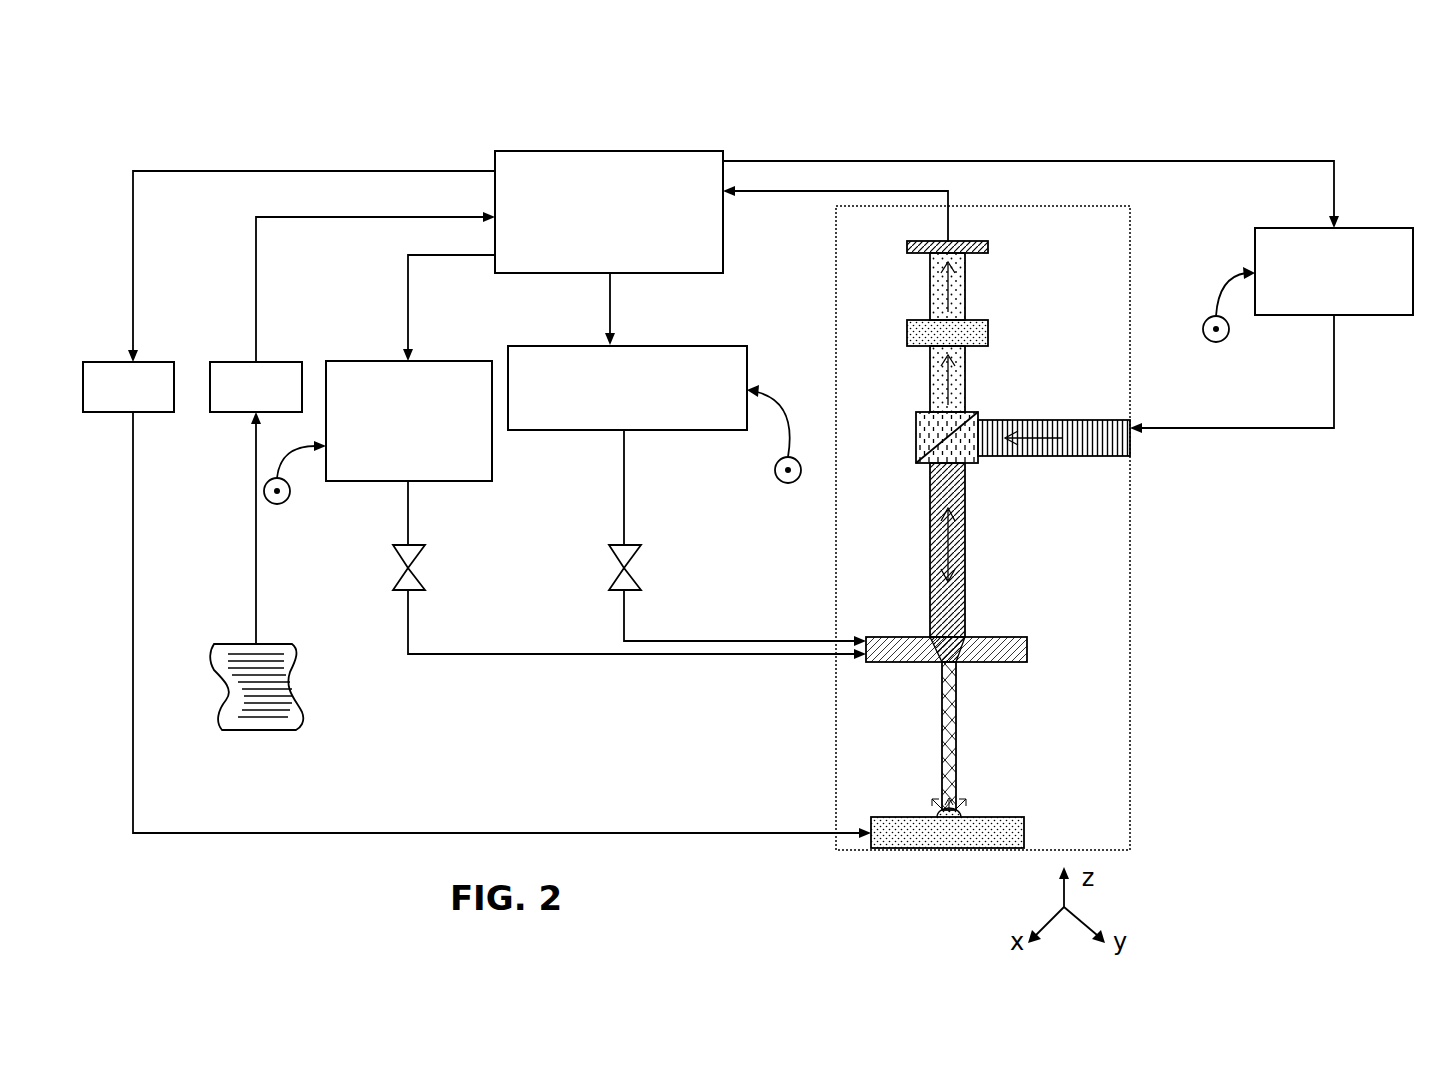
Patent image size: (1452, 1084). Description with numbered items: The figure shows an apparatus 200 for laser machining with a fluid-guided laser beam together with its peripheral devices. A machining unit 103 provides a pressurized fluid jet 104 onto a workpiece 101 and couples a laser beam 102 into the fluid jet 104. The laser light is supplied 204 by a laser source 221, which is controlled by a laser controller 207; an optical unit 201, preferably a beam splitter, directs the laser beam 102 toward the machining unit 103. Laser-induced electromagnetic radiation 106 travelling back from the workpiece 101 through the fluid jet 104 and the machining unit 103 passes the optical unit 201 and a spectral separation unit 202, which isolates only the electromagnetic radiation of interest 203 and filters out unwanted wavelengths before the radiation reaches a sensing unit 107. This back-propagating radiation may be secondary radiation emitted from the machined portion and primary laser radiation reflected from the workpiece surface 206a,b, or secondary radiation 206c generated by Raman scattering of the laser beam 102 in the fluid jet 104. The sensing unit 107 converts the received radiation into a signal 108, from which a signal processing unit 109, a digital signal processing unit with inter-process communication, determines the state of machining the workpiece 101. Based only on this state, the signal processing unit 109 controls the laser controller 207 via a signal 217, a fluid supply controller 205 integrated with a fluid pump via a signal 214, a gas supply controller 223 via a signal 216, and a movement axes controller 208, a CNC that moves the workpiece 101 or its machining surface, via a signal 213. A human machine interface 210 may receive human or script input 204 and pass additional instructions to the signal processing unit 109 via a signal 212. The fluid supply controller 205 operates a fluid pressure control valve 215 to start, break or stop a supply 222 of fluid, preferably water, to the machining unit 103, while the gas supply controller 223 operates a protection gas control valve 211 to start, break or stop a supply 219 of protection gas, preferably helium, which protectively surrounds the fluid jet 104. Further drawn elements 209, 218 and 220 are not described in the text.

The apparatus 200 is at (297, 136).
The workpiece 101 is at (1024, 834).
The laser beam 102 is at (965, 545).
The machining unit 103 is at (1027, 650).
The fluid jet 104 is at (956, 735).
The back-propagating laser-induced electromagnetic radiation 106 is at (965, 378).
The sensing unit 107 is at (988, 248).
The signal 108 is at (948, 222).
The signal processing unit 109 is at (723, 250).
The optical unit 201 is at (916, 447).
The spectral separation unit 202 is at (988, 333).
The electromagnetic radiation of interest 203 is at (965, 290).
The supply of laser light / human or script input 204 is at (1213, 428).
The fluid supply controller 205 is at (673, 346).
The secondary radiation and reflected primary laser radiation 206a,b is at (933, 813).
The secondary radiation from scattering in the fluid jet 206c is at (937, 778).
The laser controller 207 is at (1365, 228).
The movement axes controller 208 is at (157, 362).
The CNC control line to workpiece positioning 209 is at (820, 833).
The human machine interface 210 is at (278, 362).
The protection gas control valve 211 is at (425, 568).
The signal 212 is at (256, 287).
The signal 213 is at (355, 171).
The signal 214 is at (610, 292).
The fluid pressure control valve 215 is at (616, 568).
The signal 216 is at (482, 255).
The signal 217 is at (773, 161).
The protection gas sensor 218 is at (278, 504).
The supply of gas 219 is at (707, 654).
The fluid sensor 220 is at (788, 483).
The laser source 221 is at (1203, 334).
The supply of fluid 222 is at (735, 640).
The gas supply controller 223 is at (382, 481).